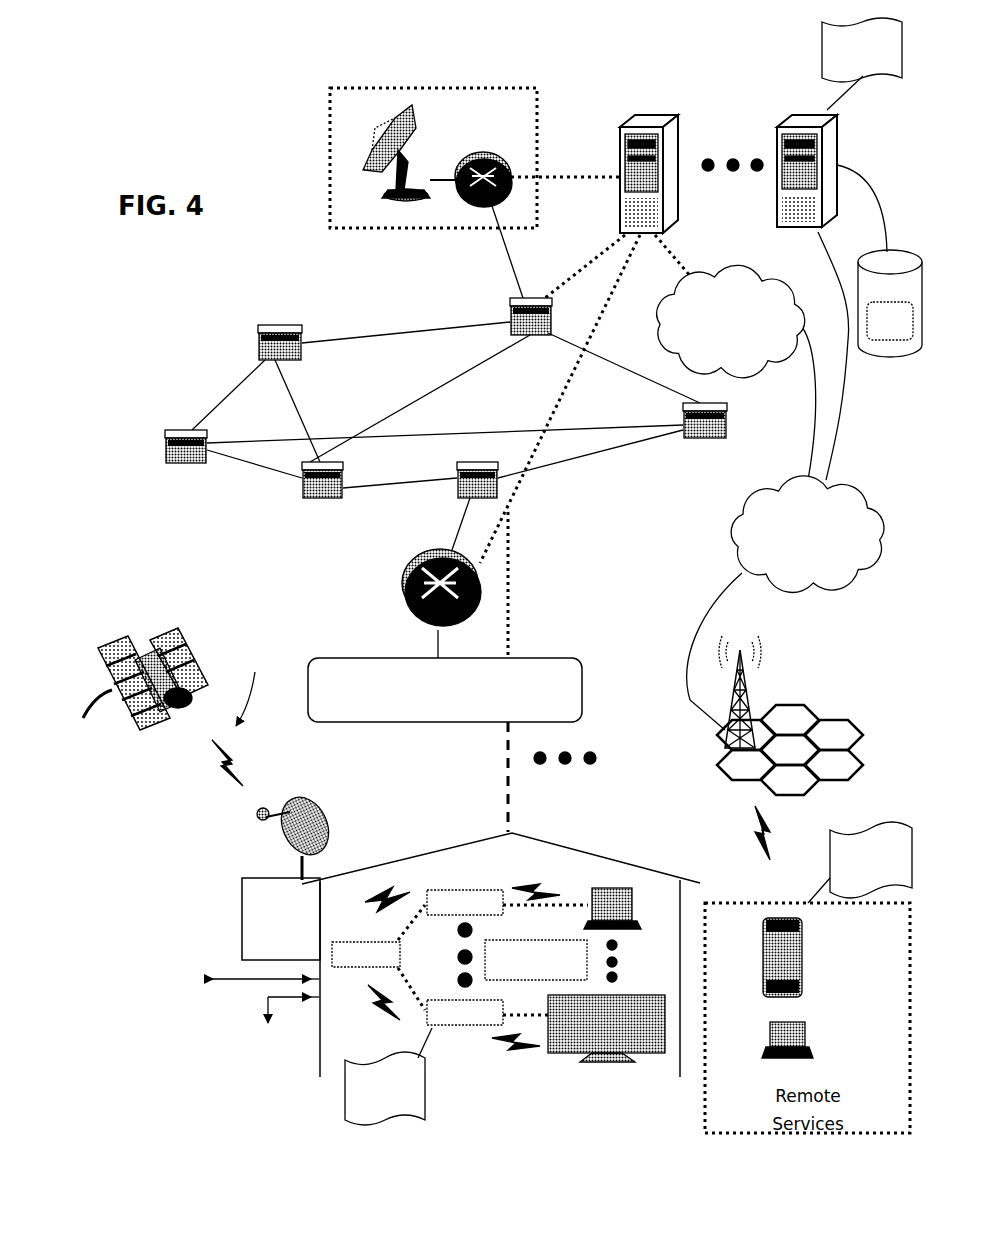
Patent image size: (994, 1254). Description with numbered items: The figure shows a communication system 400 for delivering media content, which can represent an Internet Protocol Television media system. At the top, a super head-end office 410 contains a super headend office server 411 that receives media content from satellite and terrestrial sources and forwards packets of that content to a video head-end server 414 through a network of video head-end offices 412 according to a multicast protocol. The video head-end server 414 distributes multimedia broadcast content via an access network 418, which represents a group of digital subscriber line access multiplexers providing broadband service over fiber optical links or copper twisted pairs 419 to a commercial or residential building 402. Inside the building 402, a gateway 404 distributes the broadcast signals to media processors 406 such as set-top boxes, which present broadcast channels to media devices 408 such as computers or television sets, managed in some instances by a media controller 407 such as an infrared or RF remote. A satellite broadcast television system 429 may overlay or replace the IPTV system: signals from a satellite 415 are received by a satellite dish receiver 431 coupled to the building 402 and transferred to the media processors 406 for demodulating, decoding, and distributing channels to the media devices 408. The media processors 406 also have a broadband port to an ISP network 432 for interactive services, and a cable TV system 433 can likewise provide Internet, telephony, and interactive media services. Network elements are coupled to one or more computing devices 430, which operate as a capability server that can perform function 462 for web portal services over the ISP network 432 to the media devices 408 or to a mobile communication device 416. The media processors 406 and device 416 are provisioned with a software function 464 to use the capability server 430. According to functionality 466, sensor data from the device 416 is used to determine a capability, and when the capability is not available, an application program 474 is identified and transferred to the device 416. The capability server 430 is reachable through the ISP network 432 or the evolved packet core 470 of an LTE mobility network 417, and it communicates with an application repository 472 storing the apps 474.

The communication system 400 is at (156, 169).
The super head-end office (SHO) 410 is at (406, 165).
The super headend office server (SHS) 411 is at (457, 157).
The network of video head-end offices (VHO) 412 is at (163, 448).
The video head-end server (VHS) 414 is at (402, 588).
The satellite 415 is at (134, 692).
The mobile communication device 416 is at (808, 933).
The LTE mobility network 417 is at (788, 710).
The access network 418 is at (583, 685).
The fiber optical links or copper twisted pairs 419 is at (503, 805).
The satellite broadcast television system 429 is at (256, 687).
The capability server 430 is at (810, 110).
The satellite dish receiver 431 is at (226, 875).
The ISP network 432 is at (436, 627).
The cable TV system 433 is at (268, 1044).
The building 402 is at (501, 965).
The gateway 404 is at (366, 954).
The media processors 406 is at (465, 957).
The media controller 407 is at (536, 960).
The media devices 408 is at (615, 888).
The function 462 is at (862, 50).
The software function 464 is at (388, 1076).
The functionality 466 is at (860, 862).
The evolved packet core (EPC) 470 is at (807, 534).
The application repository 472 is at (890, 303).
The application program 474 is at (890, 321).